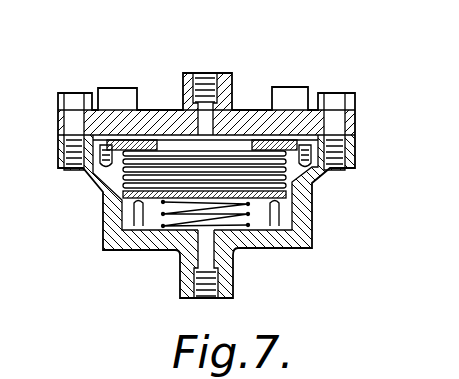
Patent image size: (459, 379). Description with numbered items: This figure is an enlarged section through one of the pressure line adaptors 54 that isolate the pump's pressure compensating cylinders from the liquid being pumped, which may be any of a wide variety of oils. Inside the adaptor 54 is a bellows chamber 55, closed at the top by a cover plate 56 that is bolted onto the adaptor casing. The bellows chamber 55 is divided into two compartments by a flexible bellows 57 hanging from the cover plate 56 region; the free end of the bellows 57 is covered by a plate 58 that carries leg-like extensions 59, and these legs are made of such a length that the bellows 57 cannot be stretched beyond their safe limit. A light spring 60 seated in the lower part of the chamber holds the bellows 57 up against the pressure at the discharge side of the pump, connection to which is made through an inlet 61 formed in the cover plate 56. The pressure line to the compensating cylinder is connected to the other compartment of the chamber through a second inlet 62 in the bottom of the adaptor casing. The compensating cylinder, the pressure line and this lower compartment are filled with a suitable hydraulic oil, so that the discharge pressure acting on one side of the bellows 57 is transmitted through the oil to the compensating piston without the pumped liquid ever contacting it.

The adaptor 54 is at (292, 238).
The bellows chamber 55 is at (283, 217).
The cover plate 56 is at (242, 112).
The flexible bellows 57 is at (313, 182).
The plate 58 is at (128, 193).
The leg-like extensions 59 is at (125, 220).
The light spring 60 is at (180, 232).
The inlet 61 is at (206, 74).
The inlet 62 is at (207, 257).